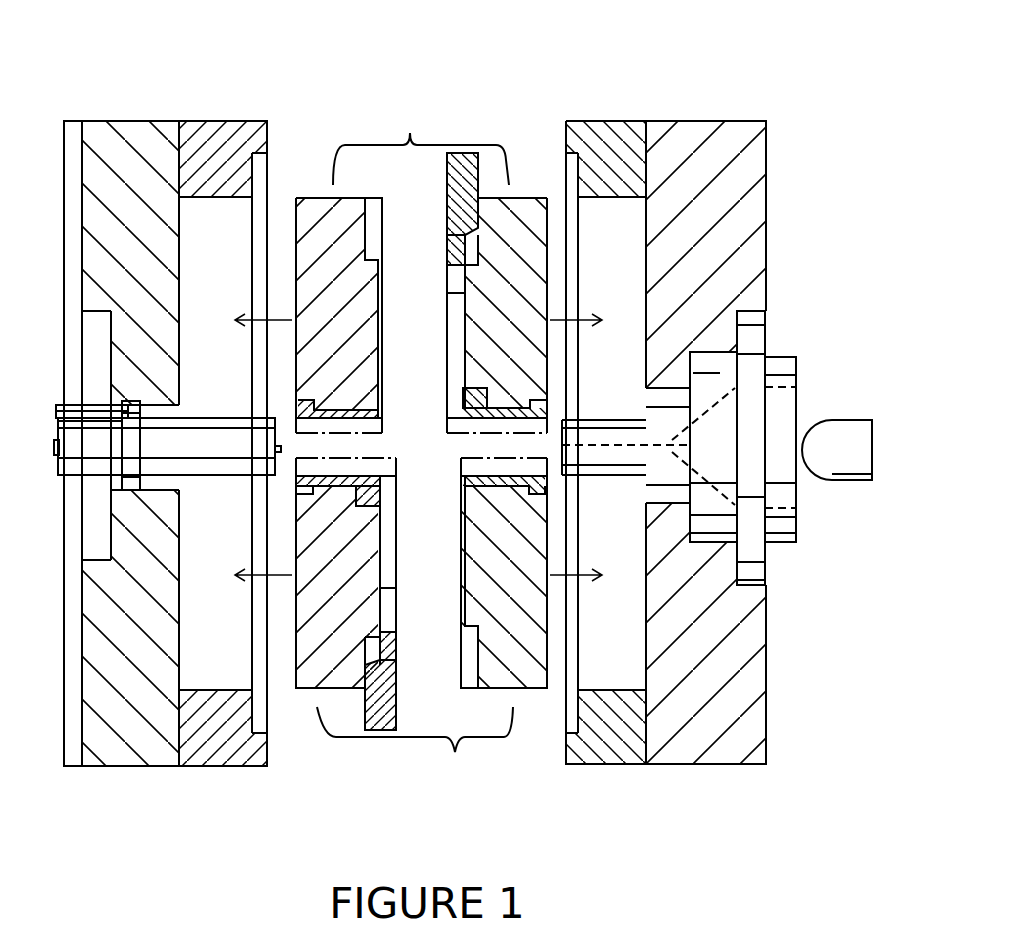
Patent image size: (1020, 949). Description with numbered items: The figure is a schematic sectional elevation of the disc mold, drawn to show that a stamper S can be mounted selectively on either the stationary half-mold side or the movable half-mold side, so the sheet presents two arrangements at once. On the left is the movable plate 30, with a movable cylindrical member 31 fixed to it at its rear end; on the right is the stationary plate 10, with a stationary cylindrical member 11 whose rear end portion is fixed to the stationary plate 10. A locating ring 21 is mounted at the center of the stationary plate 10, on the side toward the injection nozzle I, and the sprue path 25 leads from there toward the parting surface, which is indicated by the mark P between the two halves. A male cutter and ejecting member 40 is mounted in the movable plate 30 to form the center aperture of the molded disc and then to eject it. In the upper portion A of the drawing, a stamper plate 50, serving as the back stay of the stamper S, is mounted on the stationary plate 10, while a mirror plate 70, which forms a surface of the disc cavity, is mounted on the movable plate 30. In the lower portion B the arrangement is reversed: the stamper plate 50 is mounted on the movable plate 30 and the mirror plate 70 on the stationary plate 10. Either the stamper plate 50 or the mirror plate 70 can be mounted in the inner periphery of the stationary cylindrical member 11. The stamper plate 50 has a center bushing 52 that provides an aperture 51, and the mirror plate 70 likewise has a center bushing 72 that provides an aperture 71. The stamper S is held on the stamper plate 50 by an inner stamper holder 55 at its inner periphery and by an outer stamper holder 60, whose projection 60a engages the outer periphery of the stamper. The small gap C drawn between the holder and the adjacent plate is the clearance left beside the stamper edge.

The stationary plate 10 is at (717, 157).
The stationary cylindrical member 11 is at (608, 152).
The locating ring 21 is at (768, 352).
The runner 25 is at (604, 425).
The movable plate 30 is at (127, 143).
The movable cylindrical member 31 is at (224, 140).
The male cutter and ejecting member 40 is at (207, 478).
The stamper plate 50 is at (527, 217).
The aperture 51 is at (510, 425).
The center bushing 52 is at (298, 490).
The inner stamper holder 55 is at (481, 388).
The outer stamper holder 60 is at (462, 200).
The projection 60a is at (458, 252).
The mirror plate 70 is at (316, 210).
The aperture 71 is at (347, 420).
The center bushing 72 is at (542, 490).
The upper portion A is at (421, 136).
The lower portion B is at (415, 751).
The clearance C is at (378, 365).
The stamper S is at (462, 293).
The parting surface P is at (275, 270).
The injection nozzle I is at (845, 433).